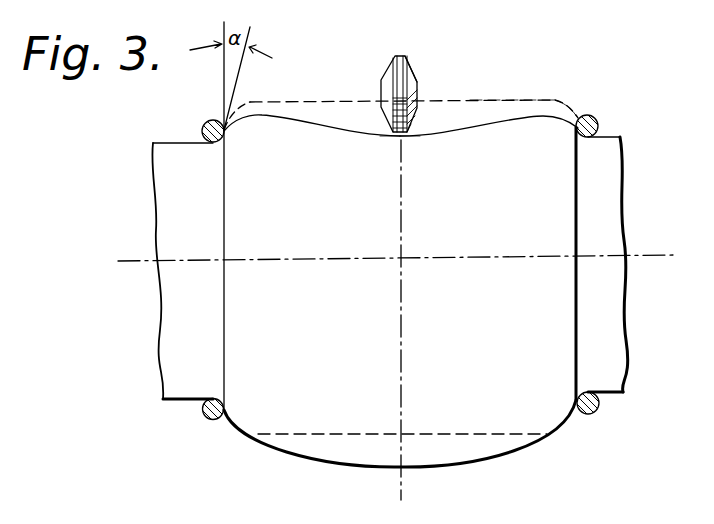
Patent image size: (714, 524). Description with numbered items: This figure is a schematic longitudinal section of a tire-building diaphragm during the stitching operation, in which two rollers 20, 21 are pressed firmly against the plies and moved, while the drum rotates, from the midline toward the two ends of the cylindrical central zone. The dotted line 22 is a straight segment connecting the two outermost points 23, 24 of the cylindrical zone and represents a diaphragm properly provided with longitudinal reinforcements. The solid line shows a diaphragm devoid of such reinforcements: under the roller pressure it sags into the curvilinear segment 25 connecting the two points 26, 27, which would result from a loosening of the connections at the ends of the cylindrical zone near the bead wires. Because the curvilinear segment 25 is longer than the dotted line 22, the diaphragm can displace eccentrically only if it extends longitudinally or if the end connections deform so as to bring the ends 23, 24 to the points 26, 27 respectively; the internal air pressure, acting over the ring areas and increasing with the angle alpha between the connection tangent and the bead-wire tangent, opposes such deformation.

The roller 20 is at (392, 82).
The roller 21 is at (411, 74).
The dotted line 22 is at (513, 100).
The outermost point of the cylindrical zone 23 is at (253, 99).
The outermost point of the cylindrical zone 24 is at (558, 100).
The curvilinear segment 25 is at (438, 136).
The point 26 is at (262, 118).
The point 27 is at (543, 118).